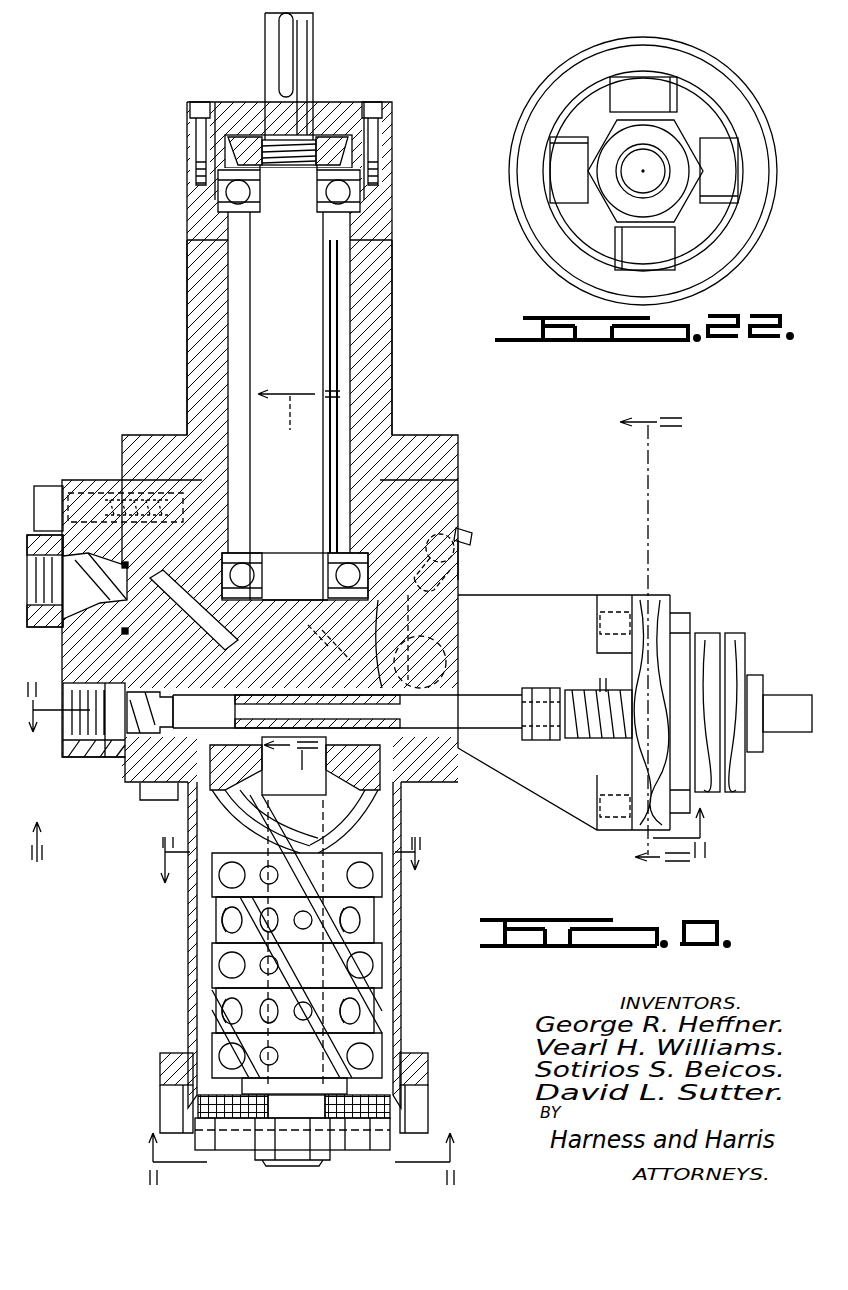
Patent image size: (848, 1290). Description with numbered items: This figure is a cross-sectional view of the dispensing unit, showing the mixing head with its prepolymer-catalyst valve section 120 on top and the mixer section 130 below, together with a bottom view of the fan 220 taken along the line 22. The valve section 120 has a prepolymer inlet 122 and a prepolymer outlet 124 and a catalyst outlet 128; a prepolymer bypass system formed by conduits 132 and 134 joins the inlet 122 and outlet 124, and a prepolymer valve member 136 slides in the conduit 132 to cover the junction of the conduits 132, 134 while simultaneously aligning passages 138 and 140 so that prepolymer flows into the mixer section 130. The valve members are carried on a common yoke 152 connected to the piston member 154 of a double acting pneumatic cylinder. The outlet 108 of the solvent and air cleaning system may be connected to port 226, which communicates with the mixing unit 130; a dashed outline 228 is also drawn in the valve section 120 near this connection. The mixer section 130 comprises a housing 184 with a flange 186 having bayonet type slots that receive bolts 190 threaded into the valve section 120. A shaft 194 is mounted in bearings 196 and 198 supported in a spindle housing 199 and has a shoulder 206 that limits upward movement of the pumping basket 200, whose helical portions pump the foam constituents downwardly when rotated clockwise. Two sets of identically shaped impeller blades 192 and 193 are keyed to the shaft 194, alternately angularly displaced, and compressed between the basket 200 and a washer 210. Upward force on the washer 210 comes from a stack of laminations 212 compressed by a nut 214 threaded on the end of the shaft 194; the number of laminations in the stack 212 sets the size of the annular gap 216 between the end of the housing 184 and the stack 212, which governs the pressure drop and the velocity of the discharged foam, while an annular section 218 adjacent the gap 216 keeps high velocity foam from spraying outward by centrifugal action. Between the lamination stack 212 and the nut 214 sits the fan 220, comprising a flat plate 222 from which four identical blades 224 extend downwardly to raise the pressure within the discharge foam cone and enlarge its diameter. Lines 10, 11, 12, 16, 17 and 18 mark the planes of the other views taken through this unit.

In FIG. 9, the section line 10- 10 is at (384, 821).
In FIG. 9, the section line 11- 11 is at (615, 431).
In FIG. 9, the section line 12- 12 is at (310, 386).
In FIG. 9, the section line 16- 16 is at (322, 724).
In FIG. 9, the section line 17- 17 is at (273, 751).
In FIG. 9, the section line 18- 18 is at (288, 860).
In FIG. 9, the line 22— 22 is at (296, 1159).
In FIG. 9, the outlet of the solvent and air cleaning system 108 is at (474, 535).
In FIG. 9, the prepolymer-catalyst valve section 120 is at (463, 572).
In FIG. 9, the prepolymer inlet 122 is at (66, 752).
In FIG. 9, the prepolymer outlet 124 is at (30, 612).
In FIG. 9, the catalyst outlet 128 is at (352, 648).
In FIG. 9, the mixer section 130 is at (355, 940).
In FIG. 9, the conduit 132 is at (213, 720).
In FIG. 9, the conduit 134 is at (163, 578).
In FIG. 9, the prepolymer valve member 136 is at (295, 688).
In FIG. 9, the passage 138 is at (380, 644).
In FIG. 9, the passage 140 is at (297, 735).
In FIG. 9, the yoke 152 is at (557, 745).
In FIG. 9, the piston member 154 is at (790, 694).
In FIG. 9, the housing 184 is at (190, 930).
In FIG. 9, the flange 186 is at (432, 792).
In FIG. 9, the bolts 190 is at (140, 798).
In FIG. 9, the impeller blades 192 is at (382, 882).
In FIG. 9, the impeller blades 193 is at (374, 930).
In FIG. 9, the shaft 194 is at (293, 316).
In FIG. 9, the bearing 196 is at (322, 552).
In FIG. 9, the bearing 198 is at (289, 194).
In FIG. 9, the spindle housing 199 is at (382, 336).
In FIG. 9, the pumping basket 200 is at (346, 835).
In FIG. 9, the shoulder 206 is at (328, 803).
In FIG. 9, the washer 210 is at (232, 1108).
In FIG. 9, the stack of laminations 212 is at (384, 1106).
In FIG. 22, the stack of laminations 212 is at (640, 278).
In FIG. 9, the nut 214 is at (292, 1153).
In FIG. 22, the nut 214 is at (595, 230).
In FIG. 9, the annular gap 216 is at (195, 1110).
In FIG. 9, the annular section 218 is at (427, 1068).
In FIG. 22, the annular section 218 is at (717, 58).
In FIG. 9, the fan 220 is at (404, 1143).
In FIG. 22, the fan 220 is at (578, 40).
In FIG. 9, the flat plate 222 is at (352, 1123).
In FIG. 22, the flat plate 222 is at (610, 207).
In FIG. 22, the blades 224 is at (660, 87).
In FIG. 9, the port 226 is at (458, 522).
In FIG. 9, the dashed bore 228 is at (332, 646).